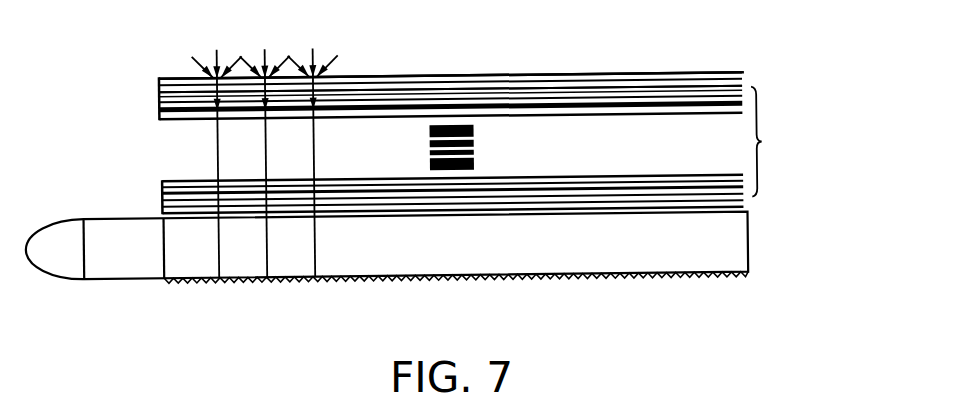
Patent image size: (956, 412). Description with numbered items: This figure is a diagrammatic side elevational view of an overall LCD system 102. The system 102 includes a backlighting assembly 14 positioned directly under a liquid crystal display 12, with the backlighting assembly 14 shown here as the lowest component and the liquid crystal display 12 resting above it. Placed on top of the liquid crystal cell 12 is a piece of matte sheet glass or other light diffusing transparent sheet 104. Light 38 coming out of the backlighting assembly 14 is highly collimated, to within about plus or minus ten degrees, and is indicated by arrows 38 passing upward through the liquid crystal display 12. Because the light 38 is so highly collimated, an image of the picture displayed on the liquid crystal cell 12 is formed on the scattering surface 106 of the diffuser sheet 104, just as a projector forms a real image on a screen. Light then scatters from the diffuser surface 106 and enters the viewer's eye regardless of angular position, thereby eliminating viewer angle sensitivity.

The LCD system 102 is at (510, 58).
The light diffusing transparent sheet 104 is at (748, 71).
The scattering surface 106 is at (157, 90).
The liquid crystal display 12 is at (480, 151).
The backlighting assembly 14 is at (747, 238).
The light 38 is at (224, 169).